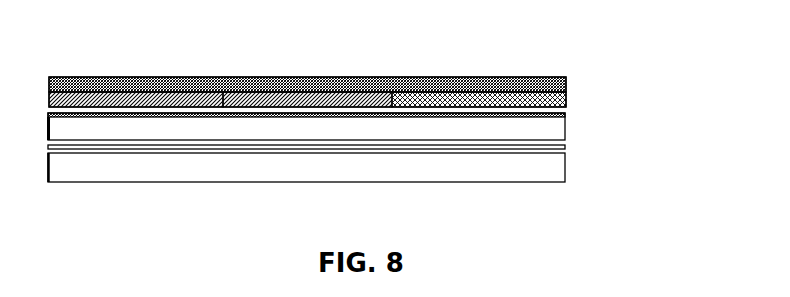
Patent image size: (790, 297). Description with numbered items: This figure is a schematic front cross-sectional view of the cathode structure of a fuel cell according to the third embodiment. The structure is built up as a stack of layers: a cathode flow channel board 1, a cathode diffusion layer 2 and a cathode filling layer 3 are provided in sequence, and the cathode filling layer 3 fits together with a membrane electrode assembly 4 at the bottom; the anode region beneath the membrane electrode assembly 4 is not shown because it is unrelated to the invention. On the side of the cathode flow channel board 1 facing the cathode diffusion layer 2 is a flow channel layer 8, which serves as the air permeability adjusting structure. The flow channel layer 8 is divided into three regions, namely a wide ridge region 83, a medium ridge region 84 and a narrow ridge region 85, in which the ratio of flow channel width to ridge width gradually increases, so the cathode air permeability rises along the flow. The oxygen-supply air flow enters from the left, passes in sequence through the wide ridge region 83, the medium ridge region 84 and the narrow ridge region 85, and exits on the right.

The cathode flow channel board 1 is at (360, 121).
The flow channel layer 8 is at (361, 63).
The wide ridge region 83 is at (132, 77).
The medium ridge region 84 is at (288, 77).
The narrow ridge region 85 is at (455, 78).
The cathode diffusion layer 2 is at (553, 130).
The cathode filling layer 3 is at (548, 146).
The membrane electrode assembly 4 is at (553, 170).